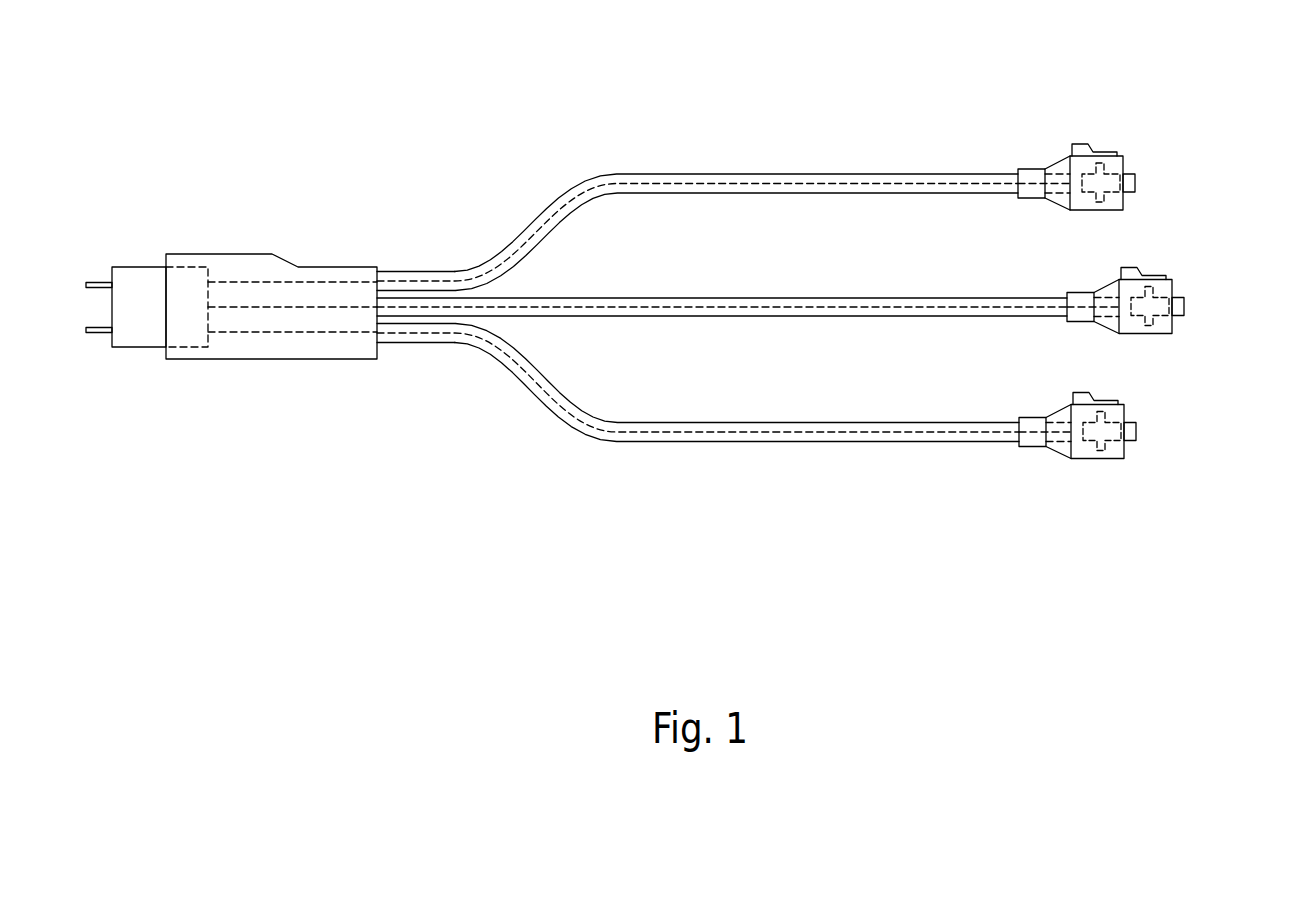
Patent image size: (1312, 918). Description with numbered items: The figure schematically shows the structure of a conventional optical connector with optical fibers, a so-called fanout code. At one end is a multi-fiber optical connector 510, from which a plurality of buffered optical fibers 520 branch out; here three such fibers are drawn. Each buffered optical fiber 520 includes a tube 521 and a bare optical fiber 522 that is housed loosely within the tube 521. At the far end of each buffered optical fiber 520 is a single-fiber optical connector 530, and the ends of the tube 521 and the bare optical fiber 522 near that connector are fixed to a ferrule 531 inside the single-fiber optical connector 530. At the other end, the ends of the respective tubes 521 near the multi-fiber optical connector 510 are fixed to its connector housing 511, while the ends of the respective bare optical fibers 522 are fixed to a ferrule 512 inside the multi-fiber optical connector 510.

The multi-fiber optical connector 510 is at (231, 340).
The connector housing 511 is at (345, 348).
The ferrule 512 is at (183, 267).
The buffered optical fiber 520 is at (722, 300).
The tube 521 is at (645, 175).
The bare optical fiber 522 is at (848, 183).
The single-fiber optical connector 530 is at (1148, 307).
The ferrule 531 is at (1115, 192).